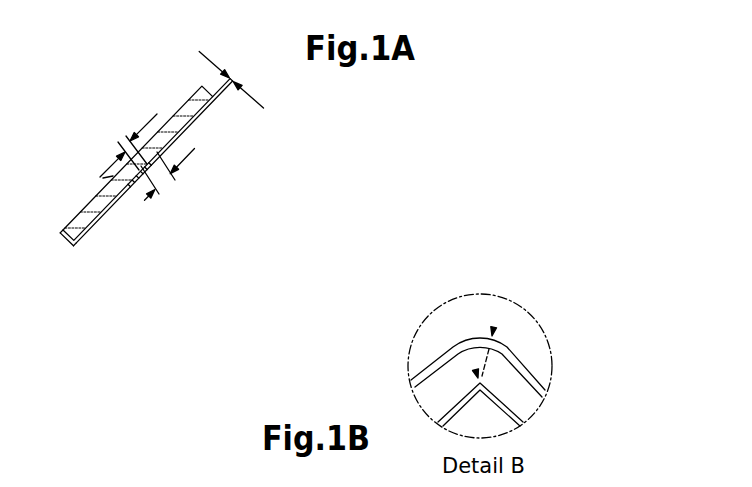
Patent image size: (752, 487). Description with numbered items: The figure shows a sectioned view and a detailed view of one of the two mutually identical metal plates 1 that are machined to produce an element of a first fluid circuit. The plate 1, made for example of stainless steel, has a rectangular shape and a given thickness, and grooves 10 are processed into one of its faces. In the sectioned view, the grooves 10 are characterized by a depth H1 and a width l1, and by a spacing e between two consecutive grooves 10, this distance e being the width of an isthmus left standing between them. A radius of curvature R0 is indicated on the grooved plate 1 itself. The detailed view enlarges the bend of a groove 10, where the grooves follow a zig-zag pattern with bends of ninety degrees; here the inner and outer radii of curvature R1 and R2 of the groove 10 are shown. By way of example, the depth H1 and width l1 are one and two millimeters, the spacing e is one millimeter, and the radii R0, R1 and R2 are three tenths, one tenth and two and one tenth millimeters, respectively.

In FIG. 1A, the metal plate 1 is at (72, 244).
In FIG. 1B, the metal plate 1 is at (485, 320).
In FIG. 1A, the groove 10 is at (131, 186).
In FIG. 1B, the groove 10 is at (512, 383).
In FIG. 1A, the distance between two consecutive grooves e is at (128, 139).
In FIG. 1A, the groove width l1 is at (177, 175).
In FIG. 1A, the groove depth H1 is at (231, 80).
In FIG. 1A, the radius of curvature of the grooves R0 is at (103, 178).
In FIG. 1B, the radius of curvature of the grooves R1 is at (476, 370).
In FIG. 1B, the radius of curvature of the grooves R2 is at (494, 327).